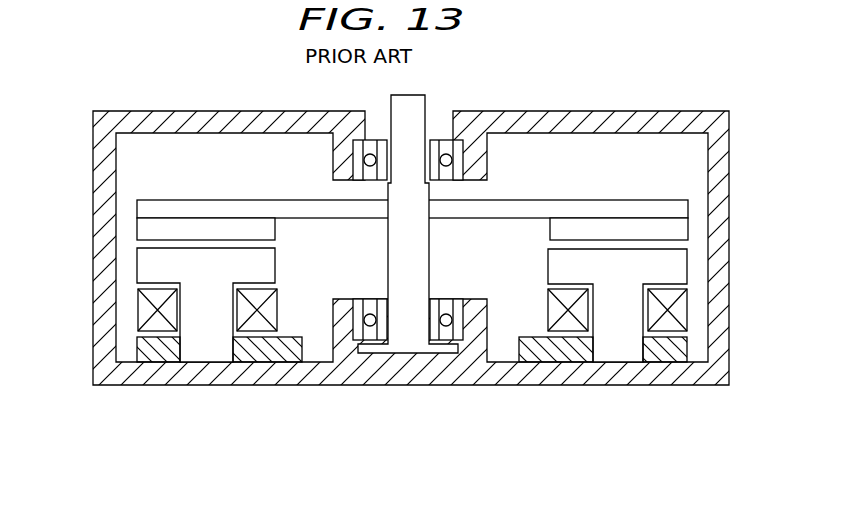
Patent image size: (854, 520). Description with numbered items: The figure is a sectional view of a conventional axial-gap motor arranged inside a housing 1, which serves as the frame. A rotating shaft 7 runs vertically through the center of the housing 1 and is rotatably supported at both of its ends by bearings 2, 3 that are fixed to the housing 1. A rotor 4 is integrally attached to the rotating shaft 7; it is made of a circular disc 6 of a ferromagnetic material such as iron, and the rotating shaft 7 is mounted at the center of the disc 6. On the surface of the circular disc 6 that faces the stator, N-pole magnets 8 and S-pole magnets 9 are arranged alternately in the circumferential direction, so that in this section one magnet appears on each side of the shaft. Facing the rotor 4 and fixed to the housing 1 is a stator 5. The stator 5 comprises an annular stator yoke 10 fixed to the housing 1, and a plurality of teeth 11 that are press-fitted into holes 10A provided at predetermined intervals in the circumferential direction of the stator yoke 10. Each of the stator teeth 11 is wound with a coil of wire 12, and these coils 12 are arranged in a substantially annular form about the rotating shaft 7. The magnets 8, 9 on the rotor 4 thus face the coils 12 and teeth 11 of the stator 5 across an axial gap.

The housing 1 is at (408, 373).
The bearing 2 is at (458, 150).
The bearing 3 is at (455, 308).
The rotor 4 is at (412, 192).
The stator 5 is at (414, 358).
The circular disc 6 is at (280, 205).
The rotating shaft 7 is at (417, 112).
The N-pole magnet 8 is at (188, 225).
The S-pole magnet 9 is at (642, 227).
The stator yoke 10 is at (565, 353).
The hole 10A is at (227, 352).
The tooth 11 is at (208, 333).
The coil 12 is at (144, 310).